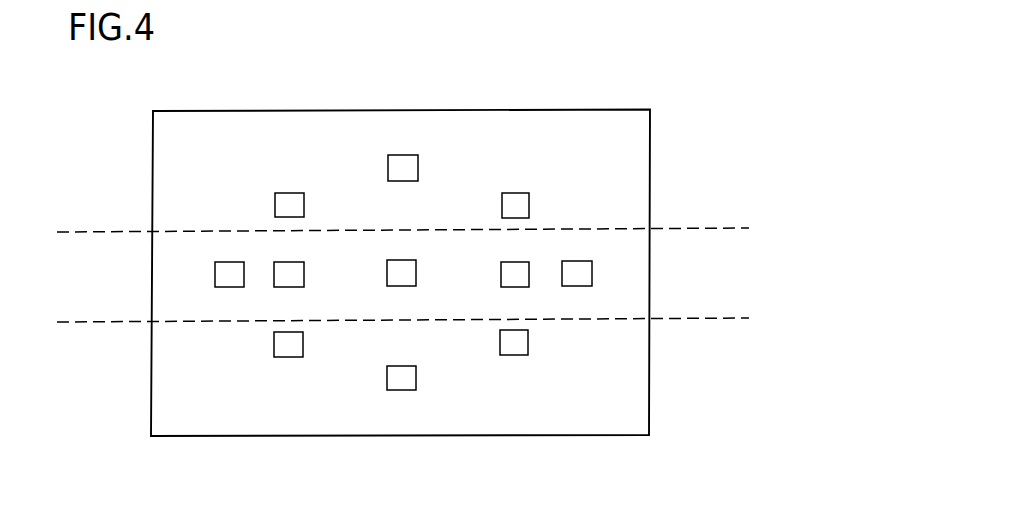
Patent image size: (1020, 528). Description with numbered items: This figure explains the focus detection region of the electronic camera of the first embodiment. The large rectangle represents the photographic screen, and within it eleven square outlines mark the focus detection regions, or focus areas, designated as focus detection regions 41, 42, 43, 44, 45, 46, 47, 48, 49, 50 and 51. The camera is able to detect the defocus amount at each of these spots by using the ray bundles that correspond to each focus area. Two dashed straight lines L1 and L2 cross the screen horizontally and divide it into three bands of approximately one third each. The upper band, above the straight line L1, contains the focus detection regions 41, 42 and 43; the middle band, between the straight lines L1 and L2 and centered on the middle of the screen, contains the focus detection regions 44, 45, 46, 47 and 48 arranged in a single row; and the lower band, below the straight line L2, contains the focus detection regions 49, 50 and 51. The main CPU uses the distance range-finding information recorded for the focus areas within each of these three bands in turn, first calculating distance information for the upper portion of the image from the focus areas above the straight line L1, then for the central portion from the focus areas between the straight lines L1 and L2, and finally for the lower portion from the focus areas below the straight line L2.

The focus detection region 41 is at (290, 192).
The focus detection region 42 is at (404, 155).
The focus detection region 43 is at (516, 193).
The focus detection region 44 is at (230, 262).
The focus detection region 45 is at (289, 262).
The focus detection region 46 is at (402, 262).
The focus detection region 47 is at (515, 262).
The focus detection region 48 is at (577, 262).
The focus detection region 49 is at (289, 358).
The focus detection region 50 is at (402, 364).
The focus detection region 51 is at (514, 356).
The straight line L1 is at (383, 232).
The straight line L2 is at (383, 325).